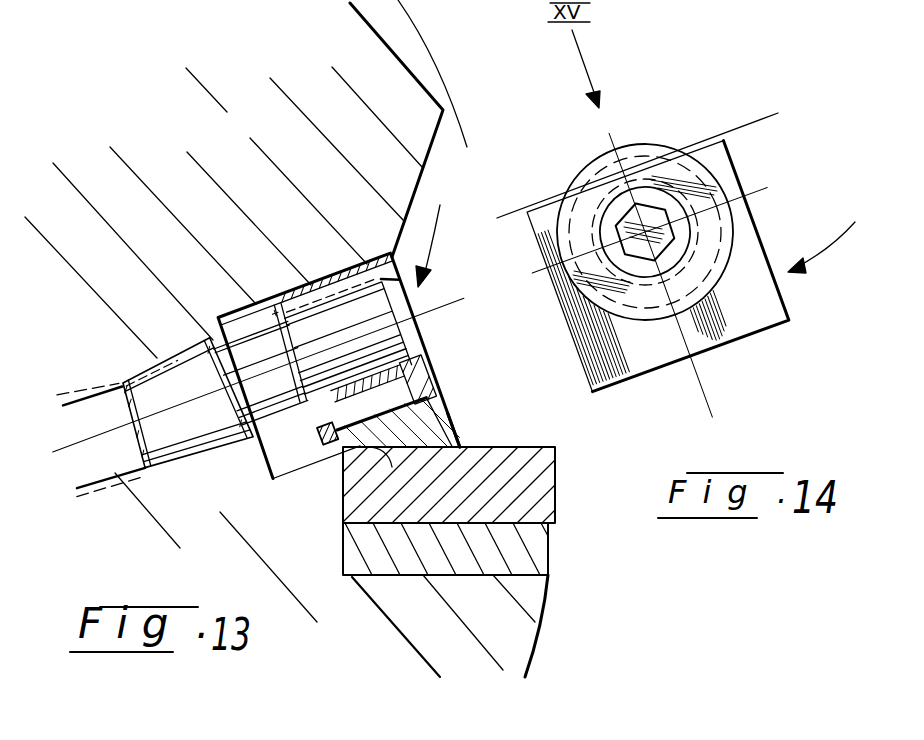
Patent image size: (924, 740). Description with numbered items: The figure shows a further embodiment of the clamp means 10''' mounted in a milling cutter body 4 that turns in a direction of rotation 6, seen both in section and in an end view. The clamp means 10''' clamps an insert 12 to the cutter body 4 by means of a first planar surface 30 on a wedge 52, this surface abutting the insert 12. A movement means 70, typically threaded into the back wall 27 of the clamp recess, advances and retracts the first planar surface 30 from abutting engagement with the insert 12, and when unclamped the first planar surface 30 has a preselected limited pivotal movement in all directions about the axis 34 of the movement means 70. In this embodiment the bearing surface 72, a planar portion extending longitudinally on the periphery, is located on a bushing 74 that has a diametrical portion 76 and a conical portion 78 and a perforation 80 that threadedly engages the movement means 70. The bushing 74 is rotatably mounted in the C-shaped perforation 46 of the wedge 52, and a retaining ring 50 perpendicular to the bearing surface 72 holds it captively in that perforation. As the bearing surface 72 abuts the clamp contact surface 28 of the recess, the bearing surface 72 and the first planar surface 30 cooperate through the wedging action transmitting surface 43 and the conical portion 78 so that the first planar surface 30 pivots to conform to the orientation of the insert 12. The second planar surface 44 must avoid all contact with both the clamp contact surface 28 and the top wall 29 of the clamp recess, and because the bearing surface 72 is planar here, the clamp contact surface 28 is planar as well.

In FIG. 13, the cutter body 4 is at (286, 340).
In FIG. 13, the direction of rotation 6 is at (435, 73).
In FIG. 13, the clamp means 10''' is at (449, 230).
In FIG. 14, the clamp means 10''' is at (835, 228).
In FIG. 13, the insert 12 is at (449, 511).
In FIG. 13, the back wall of the clamp recess 27 is at (180, 467).
In FIG. 13, the clamp contact surface 28 is at (272, 297).
In FIG. 14, the clamp contact surface 28 is at (623, 163).
In FIG. 14, the top wall of the clamp recess 29 is at (508, 212).
In FIG. 13, the first planar surface 30 is at (277, 484).
In FIG. 14, the first planar surface 30 is at (727, 347).
In FIG. 13, the axis of the movement means 34 is at (464, 297).
In FIG. 13, the wedging action transmitting surface 43 is at (453, 418).
In FIG. 14, the second planar surface 44 is at (673, 217).
In FIG. 13, the C-shaped perforation 46 is at (370, 397).
In FIG. 13, the retaining ring 50 is at (323, 446).
In FIG. 13, the wedge 52 is at (402, 425).
In FIG. 13, the movement means 70 is at (155, 416).
In FIG. 14, the movement means 70 is at (670, 252).
In FIG. 13, the bearing surface 72 is at (311, 287).
In FIG. 14, the bearing surface 72 is at (647, 206).
In FIG. 13, the bushing 74 is at (418, 384).
In FIG. 14, the bushing 74 is at (643, 240).
In FIG. 13, the diametrical portion 76 is at (432, 392).
In FIG. 14, the diametrical portion 76 is at (613, 300).
In FIG. 13, the conical portion 78 is at (438, 386).
In FIG. 14, the conical portion 78 is at (587, 298).
In FIG. 13, the perforation 80 is at (345, 373).